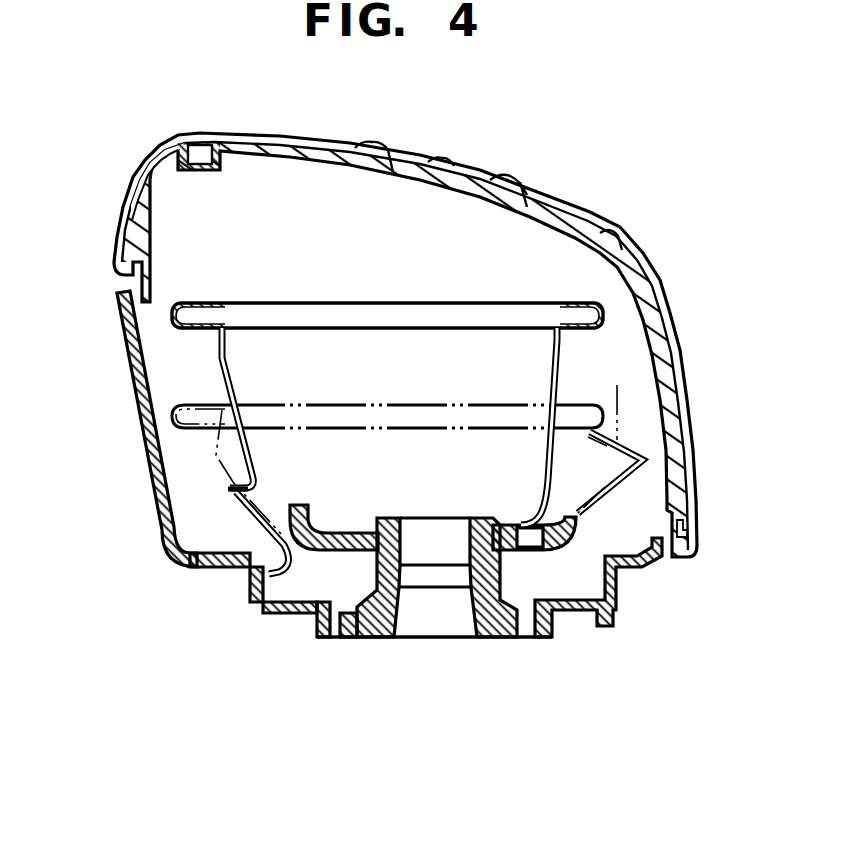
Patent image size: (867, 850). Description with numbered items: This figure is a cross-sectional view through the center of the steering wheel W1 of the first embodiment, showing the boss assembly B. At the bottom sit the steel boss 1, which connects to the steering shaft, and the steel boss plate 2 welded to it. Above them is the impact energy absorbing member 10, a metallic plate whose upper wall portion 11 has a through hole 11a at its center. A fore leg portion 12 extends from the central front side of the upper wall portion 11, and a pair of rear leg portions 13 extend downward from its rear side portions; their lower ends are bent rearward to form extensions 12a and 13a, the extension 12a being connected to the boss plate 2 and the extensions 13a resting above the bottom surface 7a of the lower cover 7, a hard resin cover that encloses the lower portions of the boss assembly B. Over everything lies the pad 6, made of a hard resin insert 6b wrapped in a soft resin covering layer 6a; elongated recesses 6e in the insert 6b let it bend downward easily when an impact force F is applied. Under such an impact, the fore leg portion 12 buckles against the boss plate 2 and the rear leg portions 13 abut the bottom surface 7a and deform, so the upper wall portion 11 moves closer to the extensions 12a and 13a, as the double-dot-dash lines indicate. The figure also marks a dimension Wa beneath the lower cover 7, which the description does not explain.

The boss 1 is at (378, 628).
The boss plate 2 is at (341, 550).
The pad 6 is at (370, 324).
The covering layer 6a is at (150, 148).
The insert 6b is at (140, 208).
The elongated recesses 6e is at (392, 170).
The lower cover 7 is at (155, 483).
The bottom surface 7a is at (217, 557).
The impact energy absorbing member 10 is at (457, 330).
The upper wall portion 11 is at (336, 304).
The through hole 11a is at (233, 318).
The fore leg portion 12 is at (561, 380).
The extension 12a is at (537, 521).
The rear leg portions 13 is at (255, 478).
The extensions 13a is at (245, 494).
The boss assembly B is at (541, 648).
The impact force F is at (398, 126).
The steering wheel W1 is at (600, 148).
The base width Wa is at (363, 706).